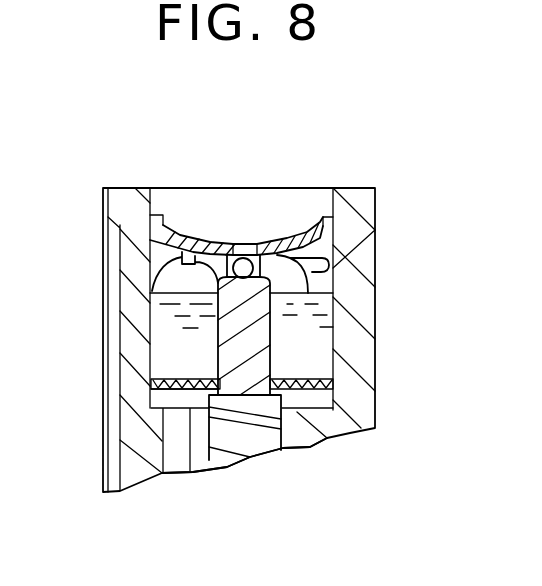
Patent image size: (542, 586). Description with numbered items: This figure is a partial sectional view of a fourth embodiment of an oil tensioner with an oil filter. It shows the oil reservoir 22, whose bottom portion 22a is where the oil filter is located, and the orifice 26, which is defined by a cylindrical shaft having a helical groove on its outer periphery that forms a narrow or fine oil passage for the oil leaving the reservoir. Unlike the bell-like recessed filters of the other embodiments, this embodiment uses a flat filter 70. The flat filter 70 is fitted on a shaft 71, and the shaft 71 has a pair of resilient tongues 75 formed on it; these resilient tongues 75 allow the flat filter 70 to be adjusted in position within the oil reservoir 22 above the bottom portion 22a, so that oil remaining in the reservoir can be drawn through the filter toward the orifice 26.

The oil reservoir 22 is at (287, 213).
The bottom portion 22a is at (318, 406).
The orifice 26 is at (273, 460).
The flat filter 70 is at (277, 313).
The shaft 71 is at (297, 369).
The resilient tongues 75 is at (126, 284).